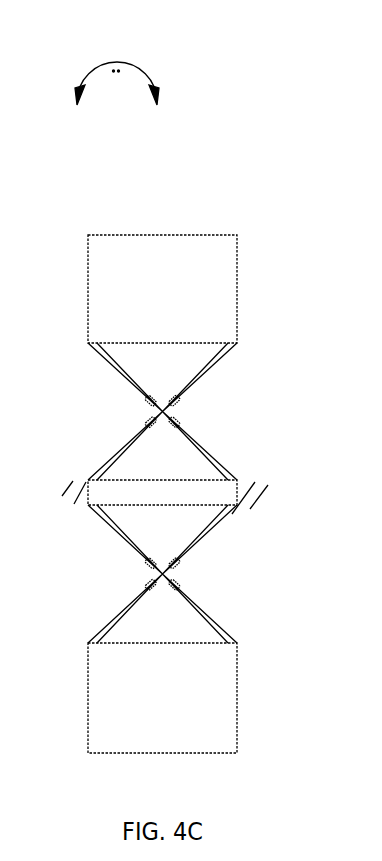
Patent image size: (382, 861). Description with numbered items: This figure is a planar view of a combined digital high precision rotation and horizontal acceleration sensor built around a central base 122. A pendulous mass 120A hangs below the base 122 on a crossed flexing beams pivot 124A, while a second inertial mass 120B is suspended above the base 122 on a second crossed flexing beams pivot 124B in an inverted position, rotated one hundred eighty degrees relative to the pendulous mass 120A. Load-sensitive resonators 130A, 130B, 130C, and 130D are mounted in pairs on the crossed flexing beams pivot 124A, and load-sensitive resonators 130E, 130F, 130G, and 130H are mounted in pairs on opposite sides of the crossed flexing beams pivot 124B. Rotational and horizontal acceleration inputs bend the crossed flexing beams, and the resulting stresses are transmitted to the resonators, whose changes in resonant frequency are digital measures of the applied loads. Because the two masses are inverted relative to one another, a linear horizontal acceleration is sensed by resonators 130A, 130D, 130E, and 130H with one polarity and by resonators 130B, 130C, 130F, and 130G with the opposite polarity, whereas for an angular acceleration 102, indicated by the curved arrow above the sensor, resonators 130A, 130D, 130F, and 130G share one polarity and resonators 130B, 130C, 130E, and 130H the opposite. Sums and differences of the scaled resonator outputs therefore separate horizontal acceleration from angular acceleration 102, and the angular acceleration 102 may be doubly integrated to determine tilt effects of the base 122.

The angular acceleration 102 is at (118, 97).
The pendulous mass 120A is at (207, 704).
The inertial mass 120B is at (205, 291).
The base 122 is at (205, 499).
The crossed flexing beams pivot 124A is at (228, 512).
The crossed flexing beams pivot 124B is at (222, 354).
The load-sensitive resonator 130A is at (166, 558).
The load-sensitive resonator 130B is at (174, 568).
The load-sensitive resonator 130C is at (182, 584).
The load-sensitive resonator 130D is at (168, 588).
The load-sensitive resonator 130E is at (158, 396).
The load-sensitive resonator 130F is at (178, 402).
The load-sensitive resonator 130G is at (183, 422).
The load-sensitive resonator 130H is at (165, 436).